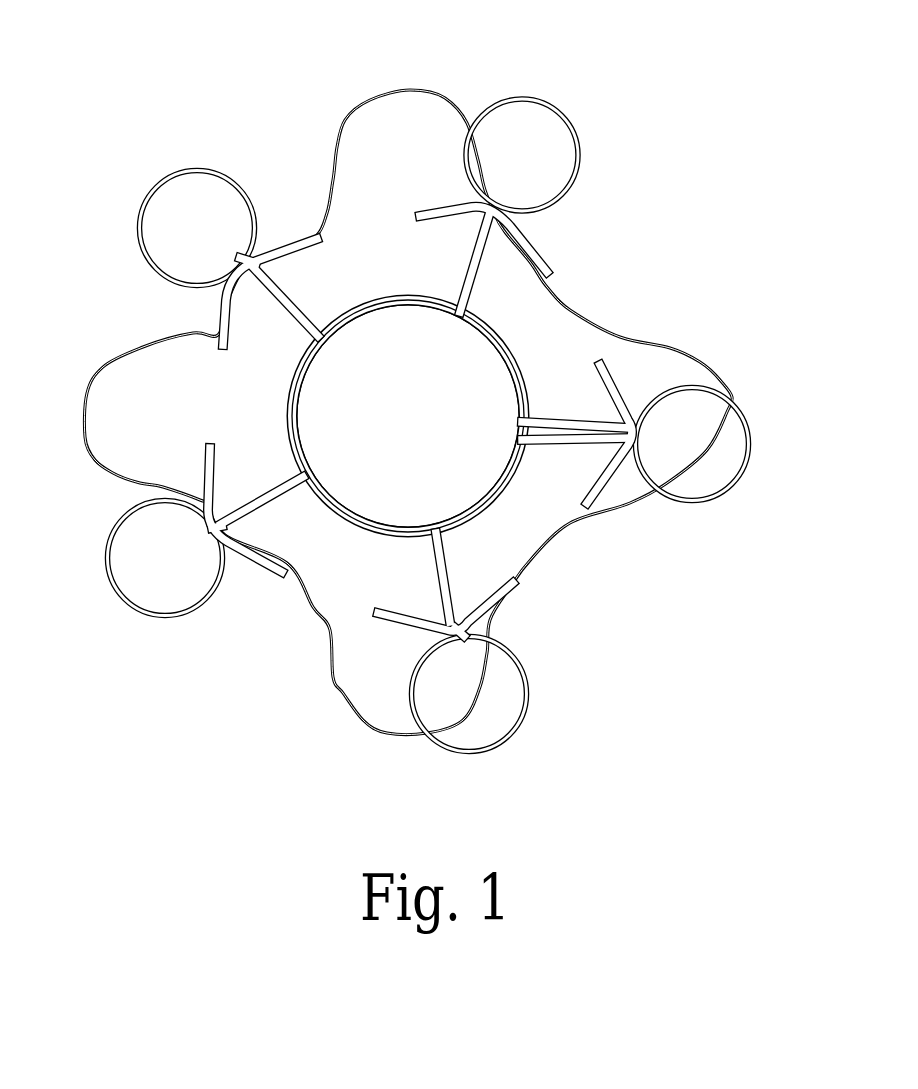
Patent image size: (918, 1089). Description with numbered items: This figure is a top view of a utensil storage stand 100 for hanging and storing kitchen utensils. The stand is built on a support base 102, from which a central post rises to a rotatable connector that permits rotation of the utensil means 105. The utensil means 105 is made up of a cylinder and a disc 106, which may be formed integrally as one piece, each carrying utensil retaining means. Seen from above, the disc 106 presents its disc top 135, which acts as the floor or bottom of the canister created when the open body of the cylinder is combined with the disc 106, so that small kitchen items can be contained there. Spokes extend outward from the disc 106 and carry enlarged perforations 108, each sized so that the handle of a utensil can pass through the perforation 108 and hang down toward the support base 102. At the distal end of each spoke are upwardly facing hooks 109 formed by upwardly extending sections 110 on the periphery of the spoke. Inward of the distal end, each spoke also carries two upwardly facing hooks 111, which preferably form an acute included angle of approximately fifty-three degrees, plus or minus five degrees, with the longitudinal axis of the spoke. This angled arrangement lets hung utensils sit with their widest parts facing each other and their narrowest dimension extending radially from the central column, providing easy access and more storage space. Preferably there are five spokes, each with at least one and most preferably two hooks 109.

The utensil storage stand 100 is at (118, 38).
The support base 102 is at (638, 333).
The utensil means 105 is at (361, 550).
The disc 106 is at (378, 302).
The perforations 108 is at (564, 147).
The upwardly facing hooks 109 is at (204, 307).
The upwardly extending sections 110 is at (534, 592).
The upwardly facing hooks 111 is at (553, 244).
The disc top 135 is at (425, 398).